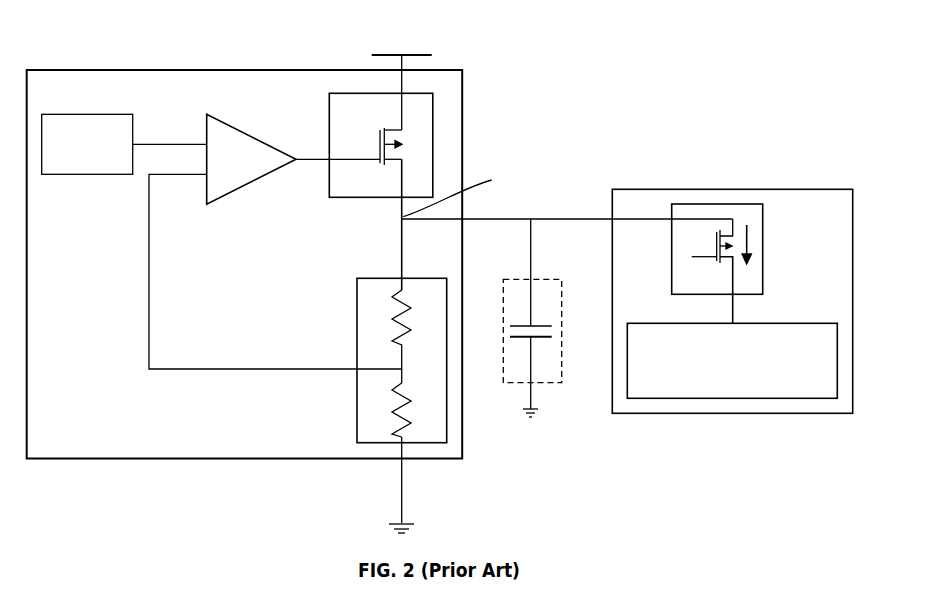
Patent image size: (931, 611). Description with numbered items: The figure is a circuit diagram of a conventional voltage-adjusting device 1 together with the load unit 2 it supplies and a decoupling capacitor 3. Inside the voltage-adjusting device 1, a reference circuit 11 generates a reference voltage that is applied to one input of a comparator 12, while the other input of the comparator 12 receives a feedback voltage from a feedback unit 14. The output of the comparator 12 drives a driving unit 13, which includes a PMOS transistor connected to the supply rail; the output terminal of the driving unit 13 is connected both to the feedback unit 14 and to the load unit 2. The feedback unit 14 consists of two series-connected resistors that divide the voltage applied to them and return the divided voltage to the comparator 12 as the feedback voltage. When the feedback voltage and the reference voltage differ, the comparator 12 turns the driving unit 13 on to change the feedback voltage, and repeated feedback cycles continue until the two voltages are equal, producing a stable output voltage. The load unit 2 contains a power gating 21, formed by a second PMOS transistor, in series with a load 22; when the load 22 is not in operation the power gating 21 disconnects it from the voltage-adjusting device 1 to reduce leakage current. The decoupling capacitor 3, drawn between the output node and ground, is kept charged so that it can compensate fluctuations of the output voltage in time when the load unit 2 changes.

The voltage-adjusting device 1 is at (462, 85).
The reference circuit 11 is at (102, 175).
The comparator 12 is at (247, 130).
The driving unit 13 is at (372, 198).
The feedback unit 14 is at (357, 355).
The load unit 2 is at (672, 189).
The power gating 21 is at (672, 280).
The load 22 is at (777, 323).
The decoupling capacitor 3 is at (504, 303).